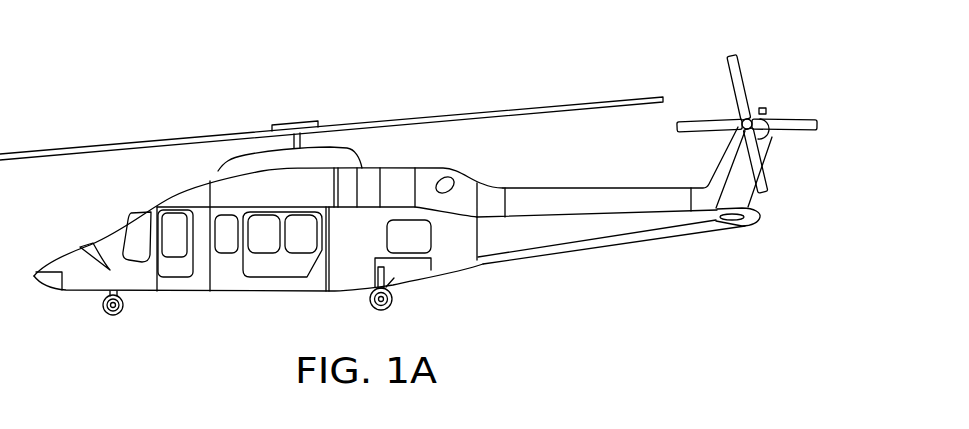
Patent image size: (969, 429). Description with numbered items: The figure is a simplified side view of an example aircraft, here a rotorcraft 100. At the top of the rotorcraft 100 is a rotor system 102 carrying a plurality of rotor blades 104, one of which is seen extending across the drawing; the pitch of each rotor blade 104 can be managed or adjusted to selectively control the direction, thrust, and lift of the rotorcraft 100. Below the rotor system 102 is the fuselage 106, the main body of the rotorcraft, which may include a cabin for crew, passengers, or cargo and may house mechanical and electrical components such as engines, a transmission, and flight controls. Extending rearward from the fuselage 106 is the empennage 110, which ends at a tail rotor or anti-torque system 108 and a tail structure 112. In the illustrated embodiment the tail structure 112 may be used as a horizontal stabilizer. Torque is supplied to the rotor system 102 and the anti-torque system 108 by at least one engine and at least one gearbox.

The rotorcraft 100 is at (180, 61).
The rotor system 102 is at (312, 100).
The rotor blade 104 is at (128, 143).
The fuselage 106 is at (230, 292).
The tail rotor or anti-torque system 108 is at (771, 94).
The empennage 110 is at (615, 251).
The tail structure 112 is at (735, 223).